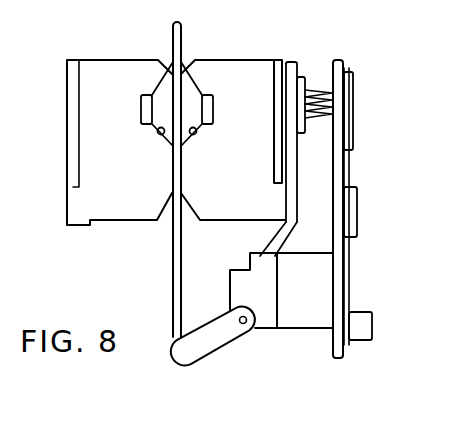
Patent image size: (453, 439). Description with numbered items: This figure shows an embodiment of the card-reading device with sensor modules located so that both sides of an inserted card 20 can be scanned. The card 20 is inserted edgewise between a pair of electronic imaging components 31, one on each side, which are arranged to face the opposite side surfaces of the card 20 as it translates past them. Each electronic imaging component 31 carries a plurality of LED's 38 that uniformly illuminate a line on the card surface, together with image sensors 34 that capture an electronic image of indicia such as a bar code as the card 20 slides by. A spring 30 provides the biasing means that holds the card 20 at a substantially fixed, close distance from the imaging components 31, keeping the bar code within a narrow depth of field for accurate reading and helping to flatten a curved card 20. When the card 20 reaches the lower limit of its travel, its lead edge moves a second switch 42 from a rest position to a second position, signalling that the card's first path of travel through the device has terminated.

The card 20 is at (173, 43).
The spring 30 is at (318, 85).
The electronic imaging component 31 is at (128, 202).
The image sensors 34 is at (141, 110).
The LED's 38 is at (159, 135).
The second switch 42 is at (215, 338).